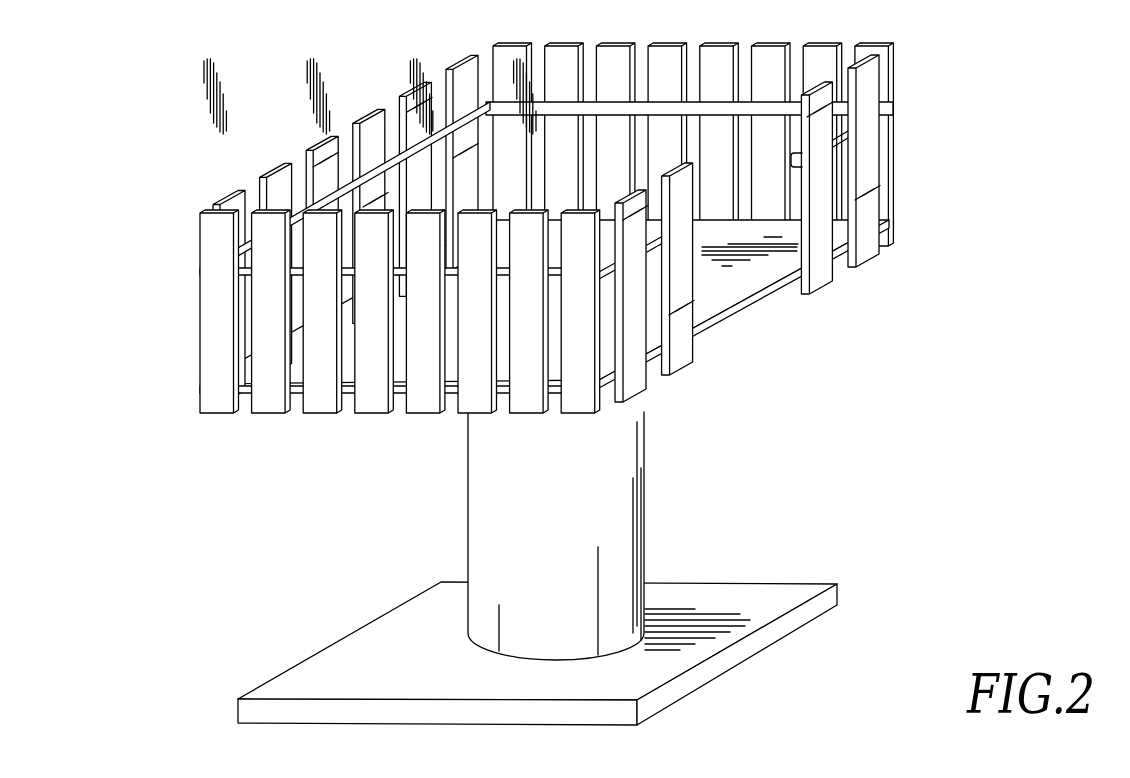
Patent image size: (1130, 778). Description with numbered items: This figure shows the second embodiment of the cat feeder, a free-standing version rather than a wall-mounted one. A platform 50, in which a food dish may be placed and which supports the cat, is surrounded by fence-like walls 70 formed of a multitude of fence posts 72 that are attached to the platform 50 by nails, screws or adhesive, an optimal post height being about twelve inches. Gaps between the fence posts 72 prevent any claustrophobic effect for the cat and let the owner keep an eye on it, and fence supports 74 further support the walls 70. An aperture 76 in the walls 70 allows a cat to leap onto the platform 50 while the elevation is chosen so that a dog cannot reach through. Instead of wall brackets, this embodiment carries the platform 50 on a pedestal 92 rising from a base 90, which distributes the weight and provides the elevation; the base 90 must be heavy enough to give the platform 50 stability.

The platform 50 is at (713, 302).
The walls 70 is at (220, 397).
The fence posts 72 is at (213, 343).
The fence supports 74 is at (245, 277).
The aperture 76 is at (778, 263).
The base 90 is at (746, 597).
The pedestal 92 is at (489, 535).